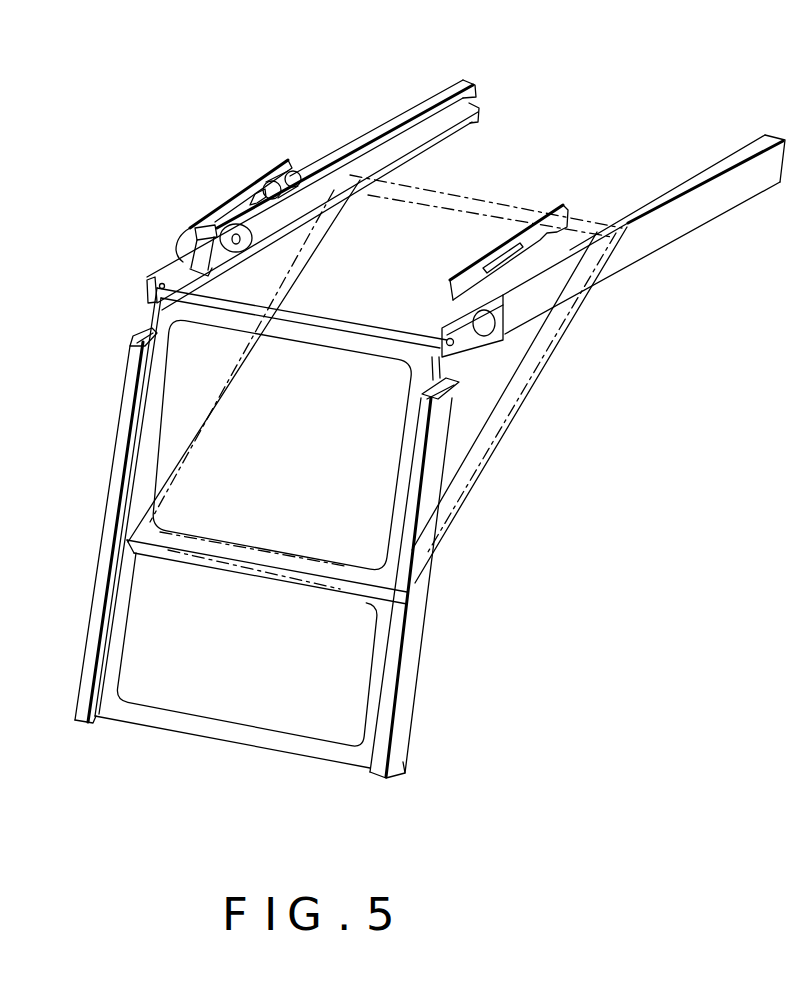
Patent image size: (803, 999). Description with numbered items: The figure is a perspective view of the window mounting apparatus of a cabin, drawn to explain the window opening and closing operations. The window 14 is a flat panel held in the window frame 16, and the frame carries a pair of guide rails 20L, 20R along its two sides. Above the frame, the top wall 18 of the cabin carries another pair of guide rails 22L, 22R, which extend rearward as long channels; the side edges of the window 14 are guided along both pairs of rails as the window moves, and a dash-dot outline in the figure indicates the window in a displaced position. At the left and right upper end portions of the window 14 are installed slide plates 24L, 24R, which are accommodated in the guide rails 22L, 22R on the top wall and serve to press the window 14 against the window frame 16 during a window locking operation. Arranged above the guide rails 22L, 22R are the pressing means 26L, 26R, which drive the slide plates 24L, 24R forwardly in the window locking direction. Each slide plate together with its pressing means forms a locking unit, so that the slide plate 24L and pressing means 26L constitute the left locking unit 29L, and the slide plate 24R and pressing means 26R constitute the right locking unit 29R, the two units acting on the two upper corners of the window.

The window 14 is at (281, 718).
The window frame 16 is at (466, 604).
The top wall 18 is at (627, 93).
The guide rail 20R is at (126, 434).
The guide rail 20L is at (407, 688).
The guide rail 22R is at (391, 126).
The guide rail 22L is at (678, 227).
The slide plate 24R is at (177, 274).
The slide plate 24L is at (450, 332).
The pressing means 26R is at (237, 188).
The pressing means 26L is at (491, 248).
The locking unit 29R is at (197, 128).
The locking unit 29L is at (422, 224).